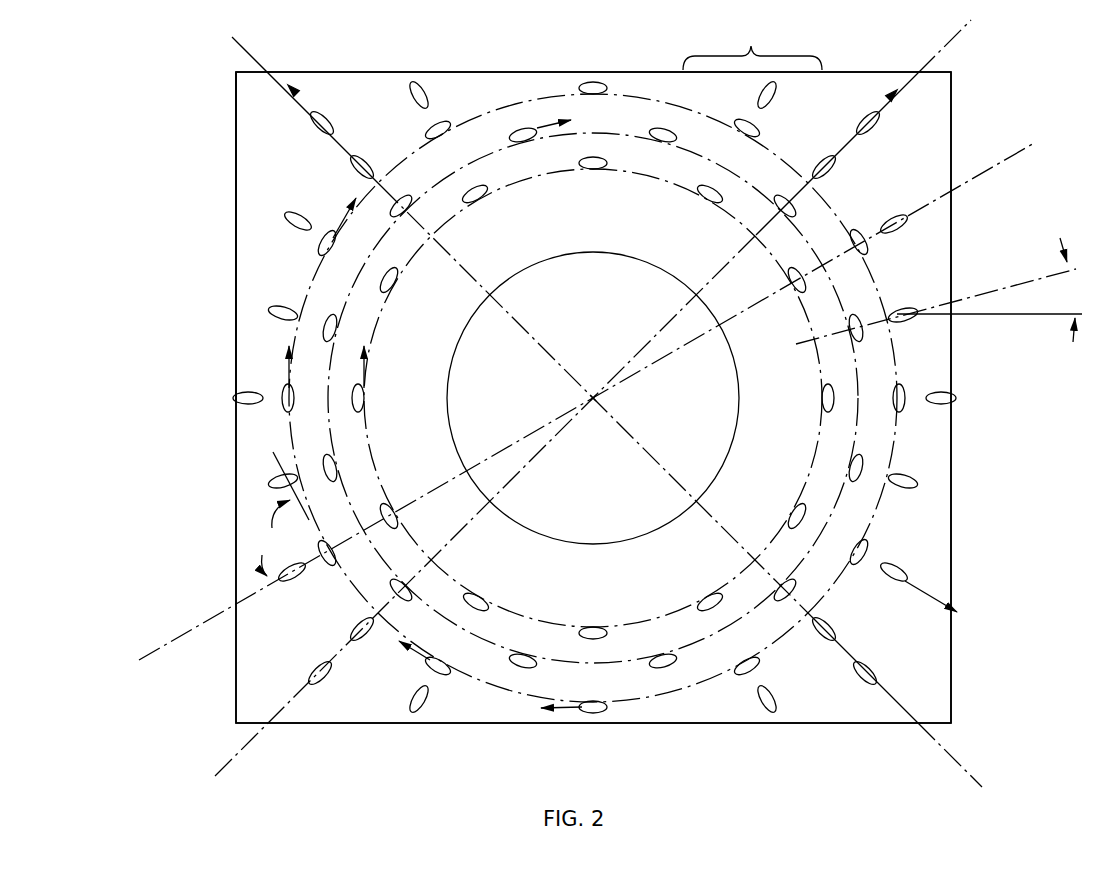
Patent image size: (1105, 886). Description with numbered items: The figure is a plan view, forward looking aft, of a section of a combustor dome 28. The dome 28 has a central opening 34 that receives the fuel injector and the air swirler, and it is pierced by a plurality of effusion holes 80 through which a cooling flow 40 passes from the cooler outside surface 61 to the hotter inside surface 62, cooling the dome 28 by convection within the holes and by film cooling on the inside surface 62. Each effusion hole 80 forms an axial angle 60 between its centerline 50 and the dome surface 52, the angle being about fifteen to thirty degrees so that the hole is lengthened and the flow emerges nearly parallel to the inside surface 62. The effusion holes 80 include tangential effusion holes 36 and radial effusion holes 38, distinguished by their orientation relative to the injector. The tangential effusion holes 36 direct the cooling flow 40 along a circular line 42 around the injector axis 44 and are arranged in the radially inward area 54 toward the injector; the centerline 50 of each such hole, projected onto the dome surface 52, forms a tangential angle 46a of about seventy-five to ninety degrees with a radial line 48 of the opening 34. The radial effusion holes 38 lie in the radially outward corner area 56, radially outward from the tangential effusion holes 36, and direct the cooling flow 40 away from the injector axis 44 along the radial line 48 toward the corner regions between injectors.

The dome 28 is at (167, 153).
The opening 34 is at (527, 407).
The tangential effusion hole 36 is at (665, 128).
The radial effusion hole 38 is at (777, 98).
The cooling flow 40 is at (304, 104).
The circular line 42 is at (348, 283).
The injector axis 44 is at (594, 396).
The tangential angle 46a is at (267, 538).
The radial line 48 is at (1022, 151).
The centerline 50 is at (274, 455).
The dome surface 52 is at (951, 512).
The radially inward area 54 is at (492, 143).
The radially outward area 56 is at (287, 173).
The axial angle 60 is at (990, 290).
The outside surface 61 is at (236, 197).
The inside surface 62 is at (236, 252).
The effusion holes 80 is at (752, 44).